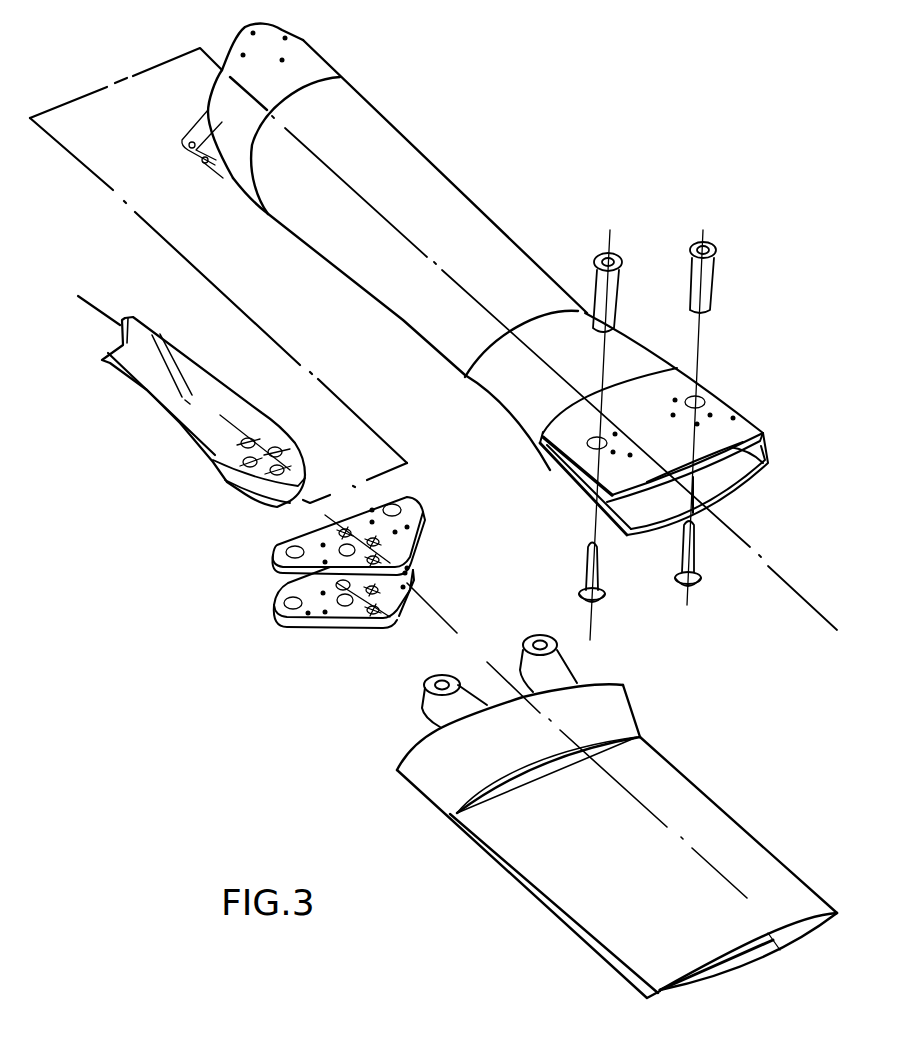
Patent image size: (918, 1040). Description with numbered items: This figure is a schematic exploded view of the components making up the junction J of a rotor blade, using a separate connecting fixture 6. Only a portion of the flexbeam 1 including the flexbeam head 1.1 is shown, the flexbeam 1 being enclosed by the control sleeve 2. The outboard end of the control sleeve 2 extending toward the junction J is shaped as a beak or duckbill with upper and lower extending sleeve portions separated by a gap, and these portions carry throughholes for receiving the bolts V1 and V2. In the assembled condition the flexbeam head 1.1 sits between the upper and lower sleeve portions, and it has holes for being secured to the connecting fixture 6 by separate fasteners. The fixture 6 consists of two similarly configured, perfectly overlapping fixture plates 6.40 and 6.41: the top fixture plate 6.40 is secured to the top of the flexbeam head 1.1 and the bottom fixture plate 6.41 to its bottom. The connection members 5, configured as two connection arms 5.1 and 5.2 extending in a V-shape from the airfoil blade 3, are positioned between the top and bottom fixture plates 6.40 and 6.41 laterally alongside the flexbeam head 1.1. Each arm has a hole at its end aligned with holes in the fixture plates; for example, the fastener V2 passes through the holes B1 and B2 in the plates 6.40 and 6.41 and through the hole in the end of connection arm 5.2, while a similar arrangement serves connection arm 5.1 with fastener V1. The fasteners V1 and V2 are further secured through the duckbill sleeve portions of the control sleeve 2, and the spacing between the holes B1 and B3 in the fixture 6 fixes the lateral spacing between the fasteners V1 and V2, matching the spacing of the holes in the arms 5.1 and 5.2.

The flexbeam 1 is at (189, 401).
The flexbeam head 1.1 is at (227, 453).
The control sleeve 2 is at (380, 143).
The airfoil blade 3 is at (690, 798).
The connection members 5 is at (479, 724).
The connection arm 5.1 is at (570, 660).
The connection arm 5.2 is at (423, 695).
The connecting fixture 6 is at (366, 531).
The top fixture plate 6.40 is at (352, 503).
The bottom fixture plate 6.41 is at (355, 599).
The hole B1 is at (285, 551).
The hole B2 is at (261, 612).
The hole B3 is at (400, 507).
The fastener V1 is at (713, 283).
The fastener V2 is at (609, 578).
The junction J is at (143, 755).